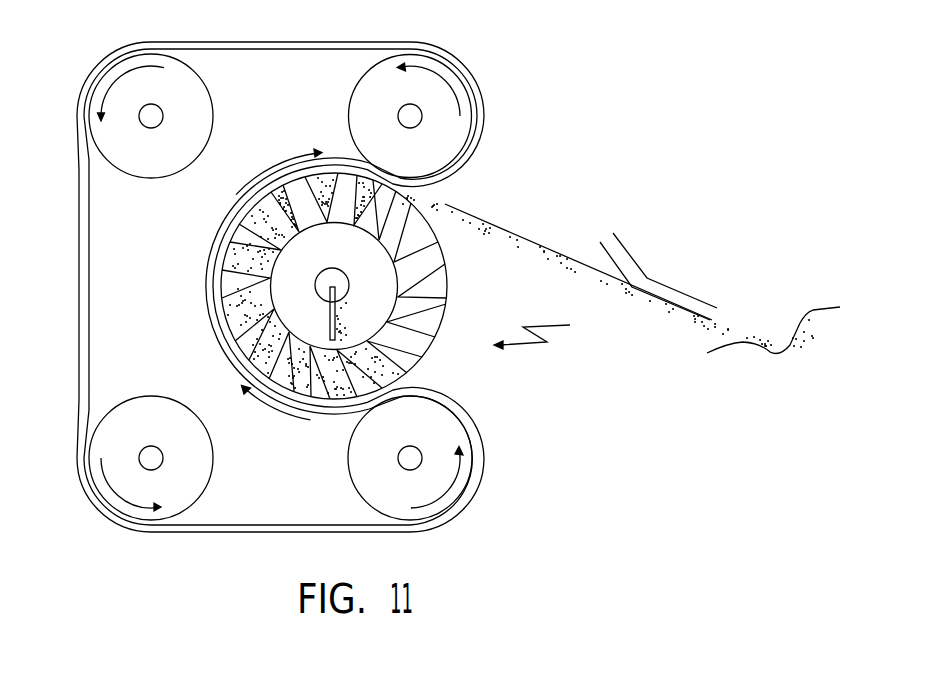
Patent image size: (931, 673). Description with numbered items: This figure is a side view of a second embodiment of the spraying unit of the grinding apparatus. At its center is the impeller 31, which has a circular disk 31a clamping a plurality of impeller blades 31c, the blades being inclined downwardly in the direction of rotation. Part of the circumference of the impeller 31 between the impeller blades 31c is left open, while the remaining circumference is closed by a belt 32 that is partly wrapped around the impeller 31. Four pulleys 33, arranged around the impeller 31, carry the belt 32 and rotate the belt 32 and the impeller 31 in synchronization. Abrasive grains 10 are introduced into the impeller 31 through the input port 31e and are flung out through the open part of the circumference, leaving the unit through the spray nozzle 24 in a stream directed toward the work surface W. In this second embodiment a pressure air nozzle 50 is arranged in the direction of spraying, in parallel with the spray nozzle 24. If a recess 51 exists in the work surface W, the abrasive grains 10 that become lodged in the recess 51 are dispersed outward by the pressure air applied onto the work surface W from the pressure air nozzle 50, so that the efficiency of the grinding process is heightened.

The abrasive grains 10 is at (222, 270).
The spray nozzle 24 is at (567, 260).
The impeller 31 is at (553, 330).
The circular disk 31a is at (421, 358).
The impeller blades 31c is at (447, 274).
The input port 31e is at (234, 229).
The belt 32 is at (468, 80).
The pulleys 33 is at (158, 56).
The pressure air nozzle 50 is at (668, 287).
The recess 51 is at (768, 337).
The work surface W is at (840, 307).